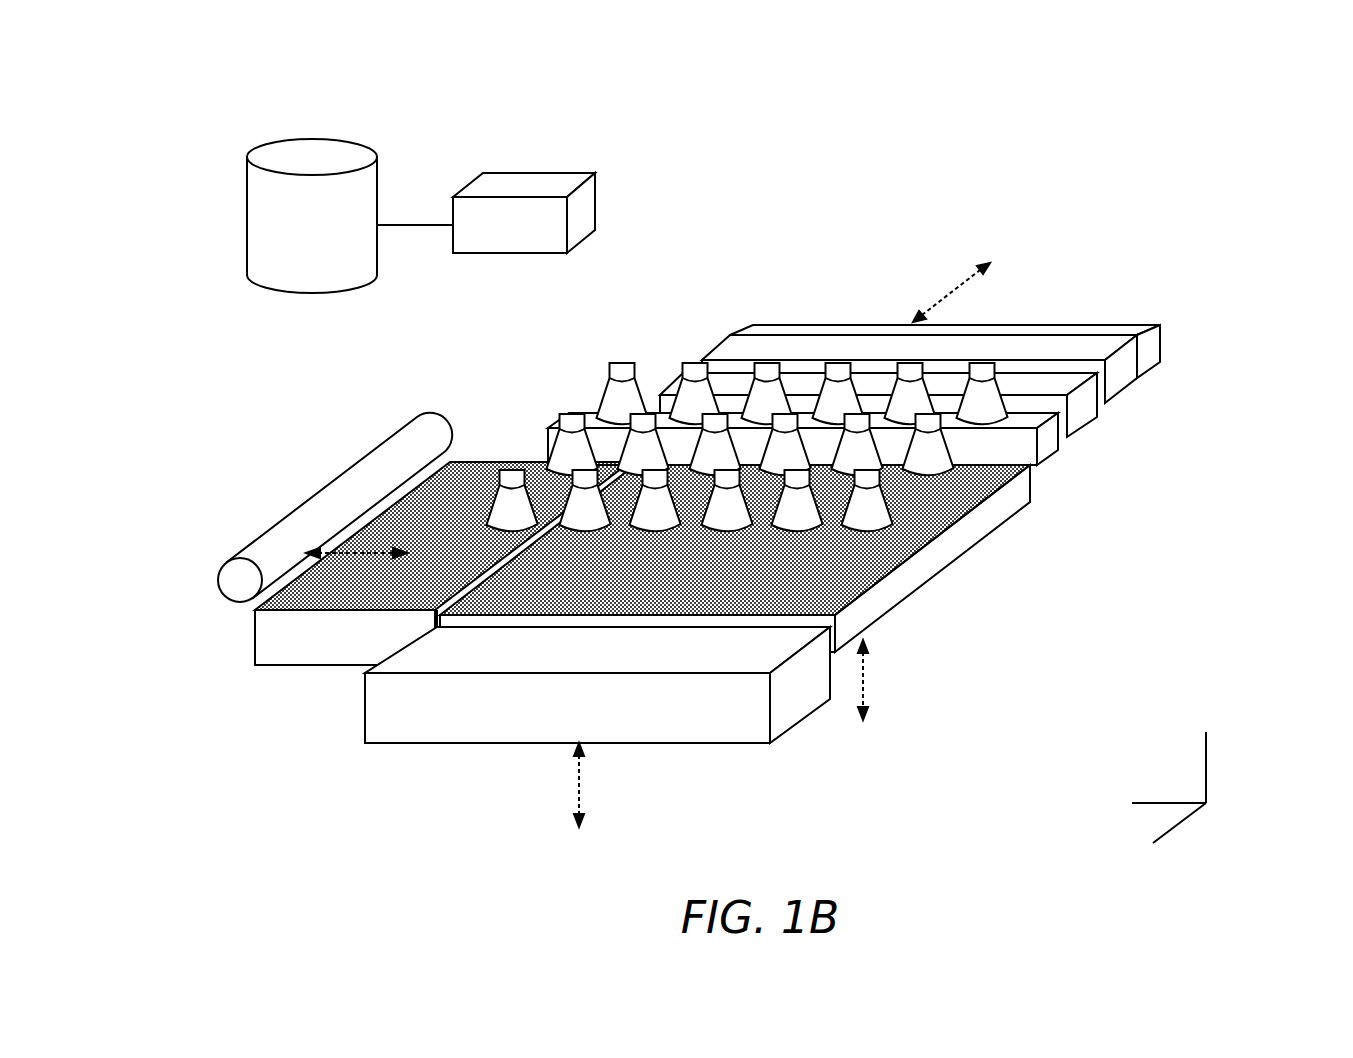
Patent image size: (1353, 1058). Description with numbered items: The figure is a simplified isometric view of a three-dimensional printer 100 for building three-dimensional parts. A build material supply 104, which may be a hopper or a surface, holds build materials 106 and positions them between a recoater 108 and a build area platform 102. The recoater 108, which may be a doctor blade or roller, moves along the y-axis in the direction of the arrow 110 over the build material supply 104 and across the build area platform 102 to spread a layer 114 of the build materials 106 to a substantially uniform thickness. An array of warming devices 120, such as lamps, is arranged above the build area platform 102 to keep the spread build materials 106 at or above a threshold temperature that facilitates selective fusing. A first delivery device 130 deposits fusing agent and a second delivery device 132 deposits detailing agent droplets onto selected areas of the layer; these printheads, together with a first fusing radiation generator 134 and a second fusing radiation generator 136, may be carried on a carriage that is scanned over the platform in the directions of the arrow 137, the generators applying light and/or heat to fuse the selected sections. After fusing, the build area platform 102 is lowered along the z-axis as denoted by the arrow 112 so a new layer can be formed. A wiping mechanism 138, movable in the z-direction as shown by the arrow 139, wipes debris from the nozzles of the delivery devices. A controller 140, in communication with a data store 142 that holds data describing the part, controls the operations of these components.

The 3D printer 100 is at (328, 83).
The build area platform 102 is at (893, 597).
The build material supply 104 is at (307, 663).
The build materials 106 is at (255, 612).
The recoater 108 is at (337, 477).
The arrow 110 is at (345, 557).
The arrow 112 is at (863, 672).
The layer 114 is at (945, 533).
The warming devices 120 is at (620, 350).
The first delivery device 130 is at (1080, 417).
The second delivery device 132 is at (1122, 377).
The first fusing radiation generator 134 is at (1040, 432).
The second fusing radiation generator 136 is at (1125, 323).
The arrow 137 is at (945, 288).
The wiping mechanism 138 is at (417, 743).
The arrow 139 is at (580, 777).
The controller 140 is at (550, 173).
The data store 142 is at (294, 268).